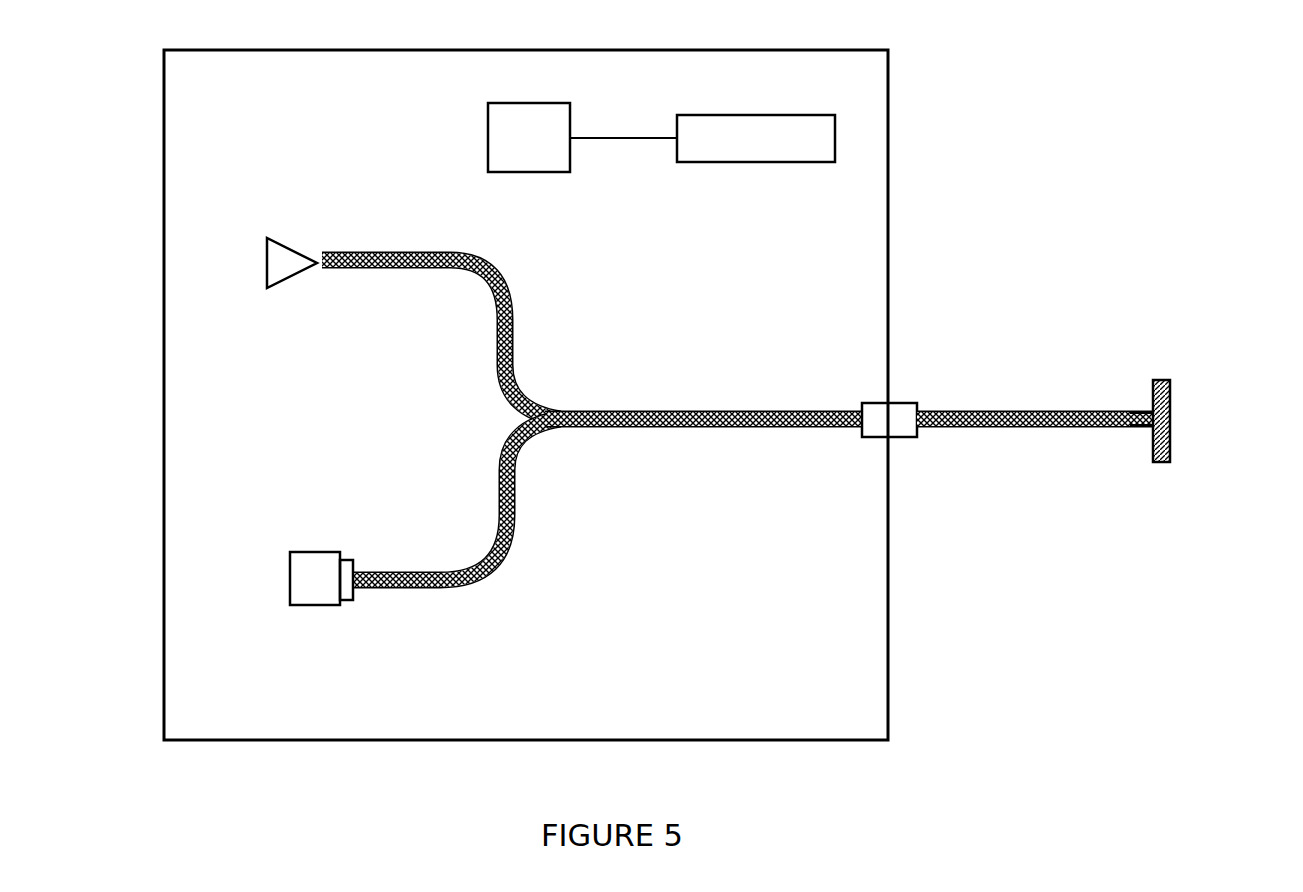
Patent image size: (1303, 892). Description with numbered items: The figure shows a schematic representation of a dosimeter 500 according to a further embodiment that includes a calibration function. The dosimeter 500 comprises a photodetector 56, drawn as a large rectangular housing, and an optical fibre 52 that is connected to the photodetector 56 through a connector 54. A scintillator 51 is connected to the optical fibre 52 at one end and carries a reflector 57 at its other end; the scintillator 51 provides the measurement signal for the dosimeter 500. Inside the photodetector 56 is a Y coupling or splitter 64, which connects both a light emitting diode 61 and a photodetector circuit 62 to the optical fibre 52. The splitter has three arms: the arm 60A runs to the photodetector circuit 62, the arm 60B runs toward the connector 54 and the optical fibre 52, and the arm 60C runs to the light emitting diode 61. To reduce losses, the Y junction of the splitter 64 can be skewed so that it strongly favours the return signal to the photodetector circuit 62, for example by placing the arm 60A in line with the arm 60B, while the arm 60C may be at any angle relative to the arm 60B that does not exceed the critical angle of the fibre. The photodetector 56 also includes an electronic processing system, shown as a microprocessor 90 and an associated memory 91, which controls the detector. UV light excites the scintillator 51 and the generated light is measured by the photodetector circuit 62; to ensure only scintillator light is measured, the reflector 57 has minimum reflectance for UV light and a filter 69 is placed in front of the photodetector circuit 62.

The dosimeter 500 is at (922, 204).
The photodetector 56 is at (888, 648).
The microprocessor 90 is at (548, 173).
The memory 91 is at (790, 163).
The light emitting diode (LED) 61 is at (293, 283).
The photodetector circuit 62 is at (295, 600).
The filter 69 is at (355, 567).
The arm of the Y junction 60A is at (515, 515).
The arm of the Y junction 60B is at (728, 430).
The arm of the Y junction 60C is at (498, 342).
The Y coupling or splitter 64 is at (538, 455).
The connector 54 is at (905, 400).
The optical fibre 52 is at (1028, 410).
The scintillator 51 is at (1138, 430).
The reflector 57 is at (1172, 397).